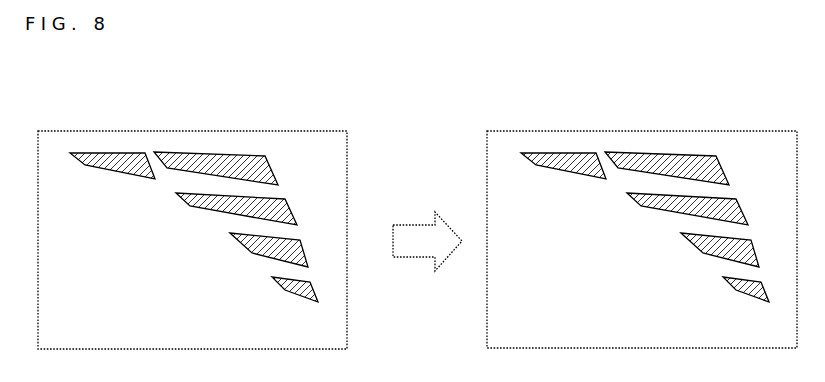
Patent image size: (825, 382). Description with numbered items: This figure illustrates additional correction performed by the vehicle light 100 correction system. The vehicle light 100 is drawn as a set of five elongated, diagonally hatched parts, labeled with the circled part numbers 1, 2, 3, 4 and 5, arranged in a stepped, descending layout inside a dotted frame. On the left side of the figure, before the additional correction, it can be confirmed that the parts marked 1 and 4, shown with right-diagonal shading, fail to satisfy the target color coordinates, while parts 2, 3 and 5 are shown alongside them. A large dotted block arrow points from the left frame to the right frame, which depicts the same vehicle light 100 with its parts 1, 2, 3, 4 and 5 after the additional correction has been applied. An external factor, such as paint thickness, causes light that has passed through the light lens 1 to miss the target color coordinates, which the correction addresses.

The vehicle light 100 is at (419, 230).
The light lens 1 is at (338, 166).
The second piece 2 is at (441, 168).
The third piece 3 is at (462, 209).
The fourth piece 4 is at (494, 250).
The fifth piece 5 is at (520, 289).